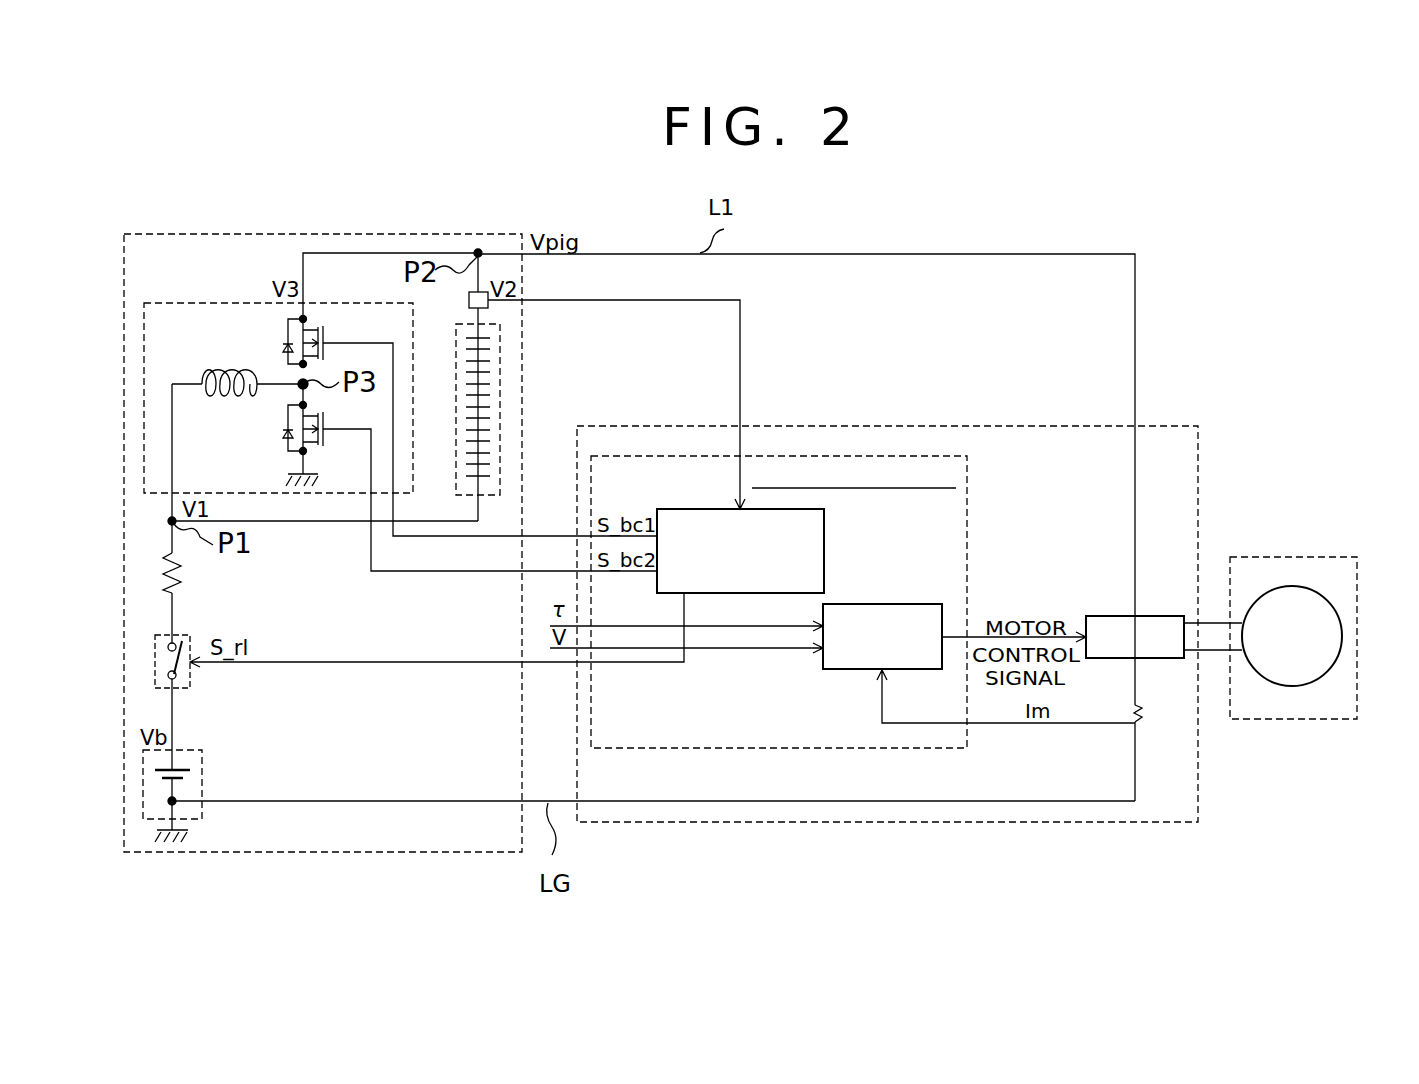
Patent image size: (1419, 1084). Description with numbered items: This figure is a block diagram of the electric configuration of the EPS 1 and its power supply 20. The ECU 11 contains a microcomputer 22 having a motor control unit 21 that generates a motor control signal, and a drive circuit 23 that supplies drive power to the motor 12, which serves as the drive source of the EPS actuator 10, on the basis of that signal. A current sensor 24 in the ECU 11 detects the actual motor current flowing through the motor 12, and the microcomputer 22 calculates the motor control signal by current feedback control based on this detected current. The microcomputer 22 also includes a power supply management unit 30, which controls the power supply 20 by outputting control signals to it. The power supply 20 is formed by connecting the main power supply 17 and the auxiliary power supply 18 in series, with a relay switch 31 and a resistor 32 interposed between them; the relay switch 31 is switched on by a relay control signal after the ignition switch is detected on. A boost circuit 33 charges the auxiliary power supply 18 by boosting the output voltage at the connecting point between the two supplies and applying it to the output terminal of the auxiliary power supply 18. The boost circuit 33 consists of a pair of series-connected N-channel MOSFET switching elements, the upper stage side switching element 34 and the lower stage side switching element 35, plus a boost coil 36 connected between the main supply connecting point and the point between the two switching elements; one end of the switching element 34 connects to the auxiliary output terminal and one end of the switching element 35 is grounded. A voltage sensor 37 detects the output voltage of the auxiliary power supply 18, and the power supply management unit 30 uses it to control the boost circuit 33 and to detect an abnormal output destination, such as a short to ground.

The EPS 1 is at (1222, 260).
The EPS actuator 10 is at (1292, 557).
The ECU 11 is at (1198, 478).
The motor 12 is at (1342, 636).
The main power supply 17 is at (202, 757).
The auxiliary power supply 18 is at (458, 412).
The power supply 20 is at (522, 355).
The motor control unit 21 is at (876, 604).
The microcomputer 22 is at (967, 495).
The drive circuit 23 is at (1112, 616).
The current sensor 24 is at (1138, 726).
The power supply management unit 30 is at (824, 548).
The relay switch 31 is at (190, 635).
The resistor 32 is at (183, 580).
The boost circuit 33 is at (163, 303).
The upper stage side switching element 34 is at (332, 343).
The lower stage side switching element 35 is at (332, 429).
The boost coil 36 is at (228, 398).
The voltage sensor 37 is at (469, 300).